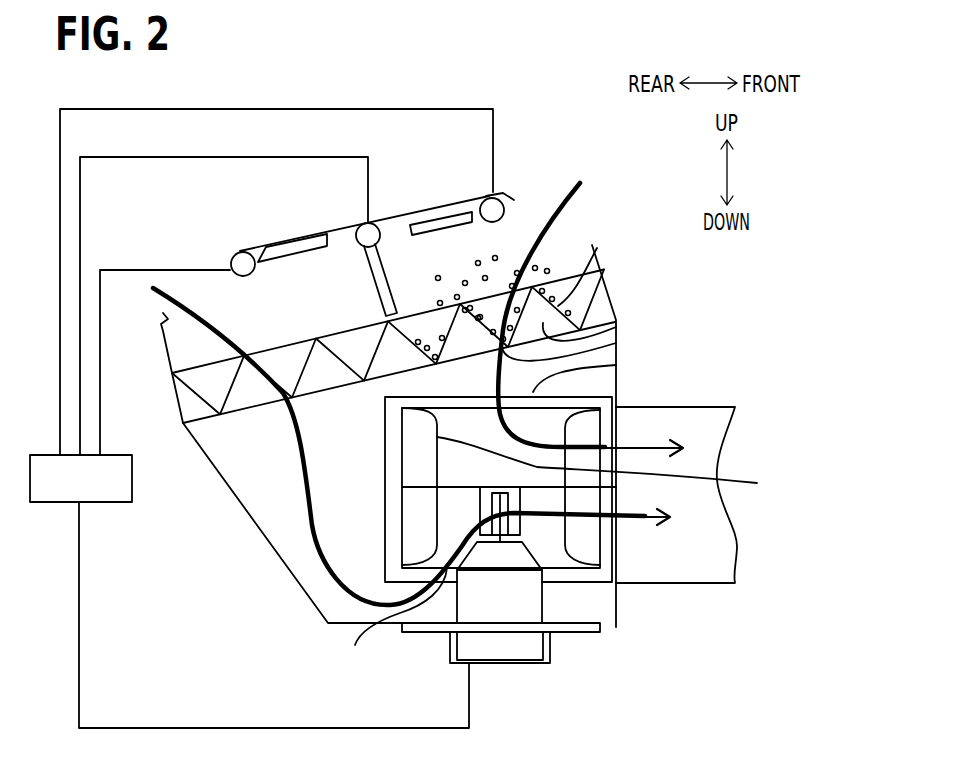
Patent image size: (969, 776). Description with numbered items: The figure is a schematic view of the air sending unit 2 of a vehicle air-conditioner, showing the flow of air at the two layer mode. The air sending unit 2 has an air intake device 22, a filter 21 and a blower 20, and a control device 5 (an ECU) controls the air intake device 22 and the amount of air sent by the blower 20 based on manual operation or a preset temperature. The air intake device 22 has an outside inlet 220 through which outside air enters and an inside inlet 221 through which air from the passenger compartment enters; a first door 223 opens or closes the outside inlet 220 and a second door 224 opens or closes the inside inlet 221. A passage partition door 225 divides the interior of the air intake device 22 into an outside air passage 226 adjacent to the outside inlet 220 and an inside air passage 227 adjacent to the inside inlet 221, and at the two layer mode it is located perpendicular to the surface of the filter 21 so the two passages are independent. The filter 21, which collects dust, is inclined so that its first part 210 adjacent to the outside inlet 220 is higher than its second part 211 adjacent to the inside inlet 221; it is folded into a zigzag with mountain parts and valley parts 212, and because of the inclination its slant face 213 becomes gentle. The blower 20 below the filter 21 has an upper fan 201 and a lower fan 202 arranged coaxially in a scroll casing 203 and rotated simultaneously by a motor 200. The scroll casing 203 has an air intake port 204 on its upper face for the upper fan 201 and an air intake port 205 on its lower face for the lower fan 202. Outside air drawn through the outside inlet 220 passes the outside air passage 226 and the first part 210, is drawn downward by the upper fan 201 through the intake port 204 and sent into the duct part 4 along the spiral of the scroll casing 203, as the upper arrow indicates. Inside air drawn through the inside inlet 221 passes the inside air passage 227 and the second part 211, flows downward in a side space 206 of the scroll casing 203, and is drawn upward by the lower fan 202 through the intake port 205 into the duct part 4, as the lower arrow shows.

The air sending unit 2 is at (186, 521).
The duct part 4 is at (680, 585).
The control device 5 is at (45, 455).
The blower 20 is at (423, 652).
The filter 21 is at (183, 398).
The air intake device 22 is at (390, 197).
The motor 200 is at (496, 645).
The upper fan 201 is at (612, 399).
The lower fan 202 is at (578, 550).
The scroll casing 203 is at (383, 548).
The air intake port 204 is at (600, 372).
The air intake port 205 is at (388, 625).
The side space 206 is at (303, 525).
The first part 210 is at (604, 320).
The second part 211 is at (252, 395).
The valley part 212 is at (584, 322).
The slant face 213 is at (425, 313).
The outside inlet 220 is at (592, 245).
The inside inlet 221 is at (230, 262).
The first door 223 is at (447, 221).
The second door 224 is at (275, 292).
The passage partition door 225 is at (368, 276).
The outside air passage 226 is at (503, 237).
The inside air passage 227 is at (257, 247).